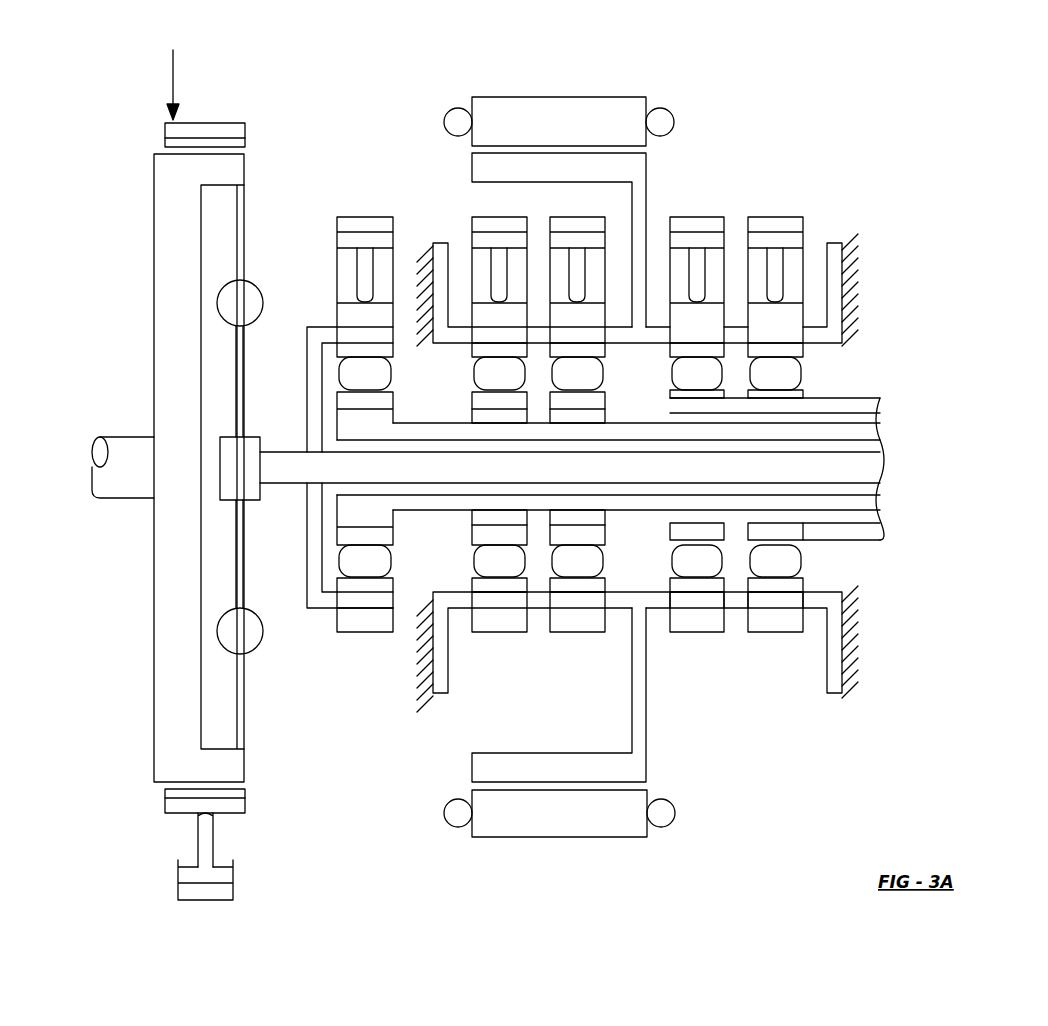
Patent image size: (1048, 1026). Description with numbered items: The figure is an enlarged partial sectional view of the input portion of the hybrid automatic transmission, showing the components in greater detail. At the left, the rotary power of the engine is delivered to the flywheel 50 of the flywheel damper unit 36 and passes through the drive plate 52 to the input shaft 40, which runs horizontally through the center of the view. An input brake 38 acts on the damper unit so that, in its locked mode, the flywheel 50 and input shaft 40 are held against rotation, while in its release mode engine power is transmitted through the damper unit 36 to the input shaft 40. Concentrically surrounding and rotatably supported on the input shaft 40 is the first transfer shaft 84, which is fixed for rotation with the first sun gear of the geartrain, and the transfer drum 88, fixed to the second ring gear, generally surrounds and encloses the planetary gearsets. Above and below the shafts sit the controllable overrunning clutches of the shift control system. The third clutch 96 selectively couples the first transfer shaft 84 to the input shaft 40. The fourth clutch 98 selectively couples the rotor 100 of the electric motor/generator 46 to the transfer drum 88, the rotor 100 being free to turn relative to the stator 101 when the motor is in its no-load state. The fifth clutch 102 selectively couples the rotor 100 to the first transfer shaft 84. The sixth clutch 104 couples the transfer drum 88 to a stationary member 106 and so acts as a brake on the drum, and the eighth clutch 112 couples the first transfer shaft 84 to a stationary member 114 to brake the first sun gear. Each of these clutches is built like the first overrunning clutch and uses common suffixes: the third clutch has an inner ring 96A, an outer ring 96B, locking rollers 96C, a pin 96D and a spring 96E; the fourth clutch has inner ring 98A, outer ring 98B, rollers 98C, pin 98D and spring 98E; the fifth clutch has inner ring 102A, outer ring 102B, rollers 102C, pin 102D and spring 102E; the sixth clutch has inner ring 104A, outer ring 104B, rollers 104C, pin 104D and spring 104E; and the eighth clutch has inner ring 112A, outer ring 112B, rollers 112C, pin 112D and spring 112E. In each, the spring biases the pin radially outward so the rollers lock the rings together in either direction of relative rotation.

The flywheel damper unit 36 is at (255, 162).
The input brake 38 is at (175, 73).
The input shaft 40 is at (880, 467).
The electric motor/generator 46 is at (584, 102).
The flywheel 50 is at (170, 290).
The drive plate 52 is at (246, 218).
The first transfer shaft 84 is at (650, 432).
The transfer drum 88 is at (838, 405).
The third clutch 96 is at (403, 358).
The inner ring of third clutch 96A is at (365, 540).
The outer ring of third clutch 96B is at (362, 622).
The locking elements of third clutch 96C is at (362, 563).
The pin of third clutch 96D is at (368, 222).
The spring of third clutch 96E is at (345, 262).
The fourth clutch 98 is at (663, 358).
The inner ring of fourth clutch 98A is at (693, 540).
The outer ring of fourth clutch 98B is at (713, 620).
The locking elements of fourth clutch 98C is at (687, 563).
The pin of fourth clutch 98D is at (703, 223).
The spring of fourth clutch 98E is at (677, 263).
The rotor 100 is at (559, 240).
The stator 101 is at (558, 823).
The fifth clutch 102 is at (605, 569).
The inner ring of fifth clutch 102A is at (575, 532).
The outer ring of fifth clutch 102B is at (595, 623).
The locking elements of fifth clutch 102C is at (572, 563).
The pin of fifth clutch 102D is at (592, 272).
The spring of fifth clutch 102E is at (562, 223).
The sixth clutch 104 is at (812, 551).
The inner ring of sixth clutch 104A is at (777, 540).
The outer ring of sixth clutch 104B is at (765, 563).
The locking elements of sixth clutch 104C is at (790, 620).
The pin of sixth clutch 104D is at (768, 223).
The spring of sixth clutch 104E is at (790, 262).
The stationary member 106 is at (838, 245).
The eighth clutch 112 is at (473, 572).
The inner ring of eighth clutch 112A is at (498, 532).
The outer ring of eighth clutch 112B is at (518, 623).
The locking elements of eighth clutch 112C is at (495, 563).
The pin of eighth clutch 112D is at (483, 225).
The spring of eighth clutch 112E is at (483, 263).
The stationary member 114 is at (443, 678).